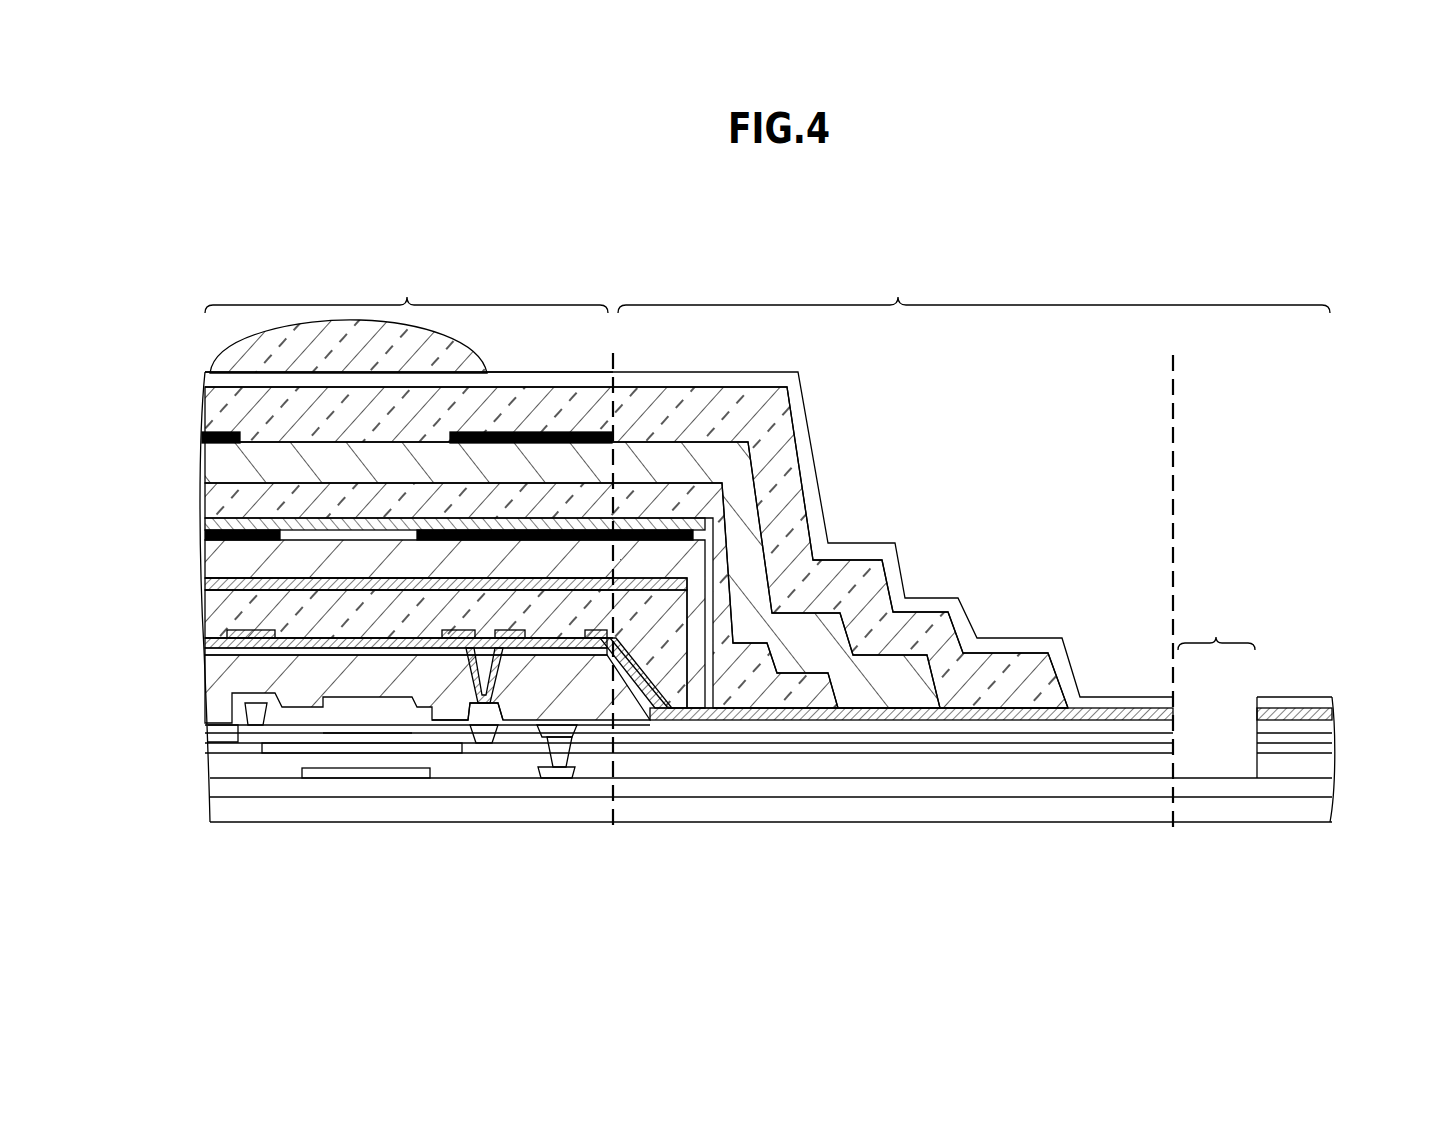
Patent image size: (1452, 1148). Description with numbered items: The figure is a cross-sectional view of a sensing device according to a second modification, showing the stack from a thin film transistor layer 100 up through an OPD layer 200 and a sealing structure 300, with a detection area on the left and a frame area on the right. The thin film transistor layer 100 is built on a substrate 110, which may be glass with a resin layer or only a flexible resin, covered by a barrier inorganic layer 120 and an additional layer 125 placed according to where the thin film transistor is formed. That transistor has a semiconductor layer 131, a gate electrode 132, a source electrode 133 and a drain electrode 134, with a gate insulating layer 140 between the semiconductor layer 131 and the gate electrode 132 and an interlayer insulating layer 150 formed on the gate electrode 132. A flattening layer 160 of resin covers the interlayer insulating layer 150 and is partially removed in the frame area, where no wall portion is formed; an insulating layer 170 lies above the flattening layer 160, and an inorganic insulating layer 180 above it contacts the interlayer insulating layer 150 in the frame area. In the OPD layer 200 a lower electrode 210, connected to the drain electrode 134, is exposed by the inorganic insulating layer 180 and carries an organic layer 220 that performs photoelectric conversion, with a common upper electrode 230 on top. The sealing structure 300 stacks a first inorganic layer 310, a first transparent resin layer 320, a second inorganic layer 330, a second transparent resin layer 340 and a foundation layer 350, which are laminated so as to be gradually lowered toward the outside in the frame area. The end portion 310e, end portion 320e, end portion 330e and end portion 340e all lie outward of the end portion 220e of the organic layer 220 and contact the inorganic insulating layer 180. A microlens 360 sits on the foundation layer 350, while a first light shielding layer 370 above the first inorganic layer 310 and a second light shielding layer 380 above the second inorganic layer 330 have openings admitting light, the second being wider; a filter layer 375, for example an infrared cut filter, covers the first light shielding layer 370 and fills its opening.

The TFT layer 100 is at (1397, 710).
The substrate 110 is at (1343, 778).
The barrier inorganic layer 120 is at (218, 763).
The additional layer 125 is at (372, 776).
The semiconductor layer 131 is at (288, 750).
The gate electrode 132 is at (352, 734).
The source electrode 133 is at (252, 742).
The drain electrode 134 is at (483, 742).
The gate insulating layer 140 is at (447, 732).
The interlayer insulating layer 150 is at (202, 720).
The flattening layer 160 is at (210, 678).
The insulating layer 170 is at (203, 652).
The inorganic insulating layer 180 is at (745, 720).
The OPD layer 200 is at (180, 575).
The lower electrode 210 is at (400, 637).
The organic layer 220 is at (340, 592).
The end portion of the organic layer 220e is at (697, 720).
The upper electrode 230 is at (288, 577).
The sealing structure 300 is at (180, 373).
The first inorganic layer 310 is at (667, 547).
The end portion of the first inorganic layer 310e is at (715, 720).
The first transparent resin layer 320 is at (707, 492).
The end portion of the first transparent resin layer 320e is at (807, 720).
The second inorganic layer 330 is at (745, 492).
The end portion of the second inorganic layer 330e is at (893, 720).
The second transparent resin layer 340 is at (802, 483).
The end portion of the second transparent resin layer 340e is at (1017, 720).
The foundation layer 350 is at (855, 548).
The microlens 360 is at (473, 358).
The first light shielding layer 370 is at (627, 533).
The filter layer 375 is at (690, 527).
The second light shielding layer 380 is at (560, 438).